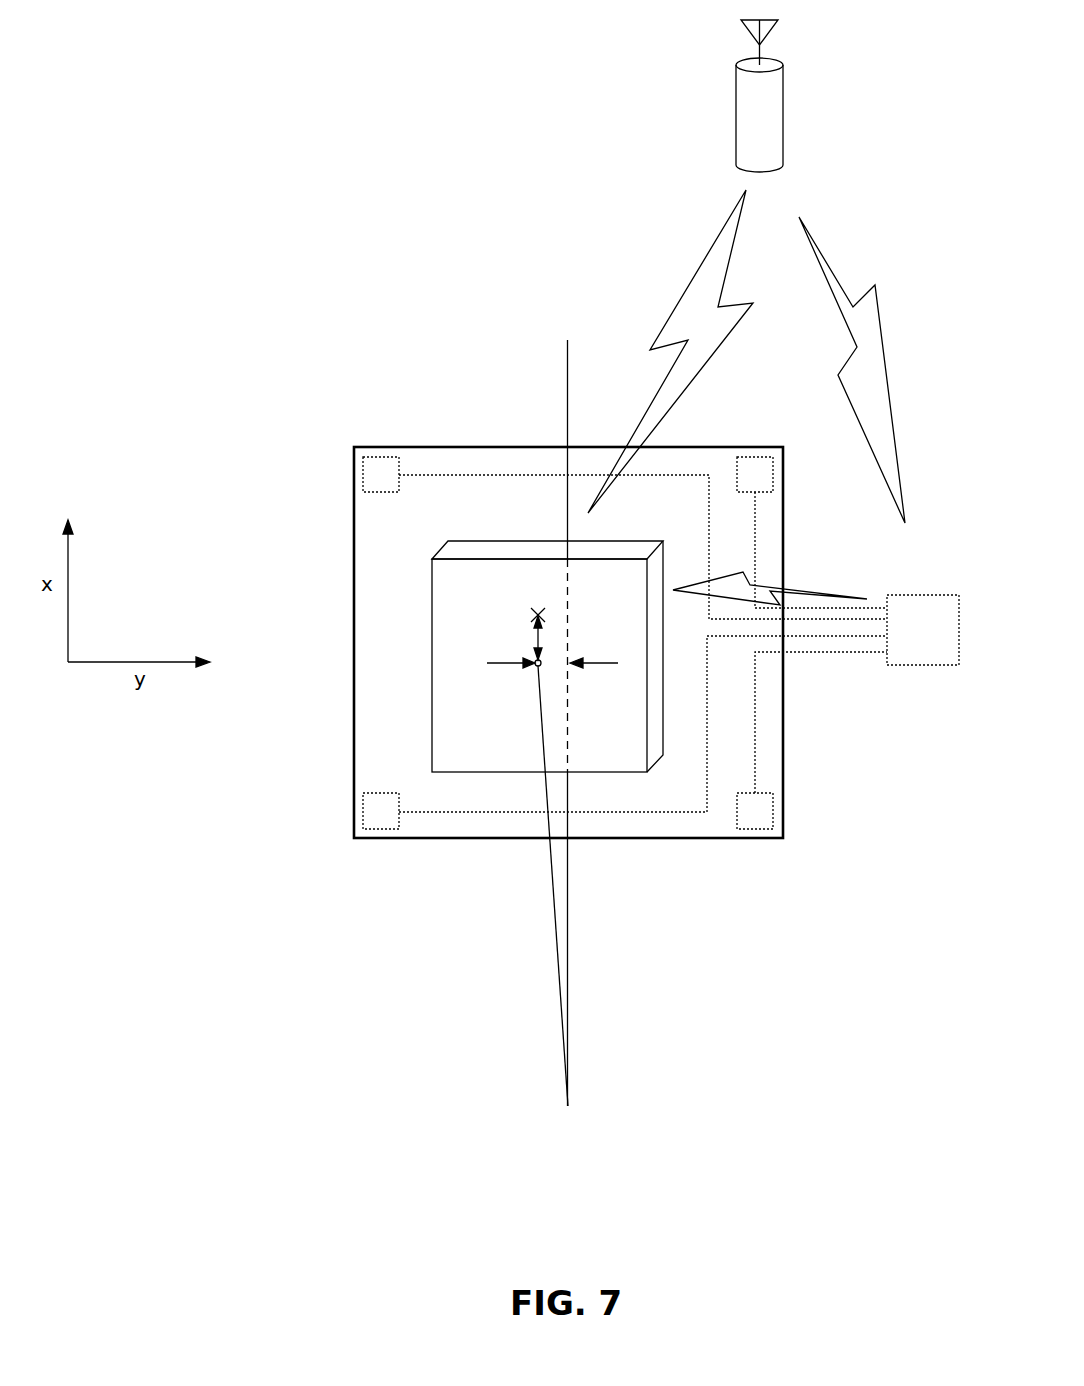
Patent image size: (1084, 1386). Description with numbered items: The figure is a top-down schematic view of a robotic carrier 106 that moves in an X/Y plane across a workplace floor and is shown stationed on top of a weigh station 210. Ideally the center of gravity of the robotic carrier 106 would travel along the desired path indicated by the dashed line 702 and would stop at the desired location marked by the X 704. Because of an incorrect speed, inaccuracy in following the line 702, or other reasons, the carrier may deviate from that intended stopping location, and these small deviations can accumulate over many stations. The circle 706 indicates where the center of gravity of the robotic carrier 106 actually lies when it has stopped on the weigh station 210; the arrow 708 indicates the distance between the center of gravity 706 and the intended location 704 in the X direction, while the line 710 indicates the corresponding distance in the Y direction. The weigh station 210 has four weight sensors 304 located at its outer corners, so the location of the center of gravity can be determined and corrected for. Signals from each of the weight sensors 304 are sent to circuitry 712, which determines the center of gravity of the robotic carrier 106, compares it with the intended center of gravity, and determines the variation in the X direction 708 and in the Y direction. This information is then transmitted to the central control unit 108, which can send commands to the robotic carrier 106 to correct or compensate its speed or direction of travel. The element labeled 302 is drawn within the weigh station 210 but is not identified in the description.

The central control unit 108 is at (745, 110).
The weigh station 210 is at (485, 436).
The circuit board 302 is at (417, 656).
The weight sensors 304 is at (363, 479).
The robotic carrier 106 is at (595, 542).
The dashed line 702 is at (571, 714).
The X 704 is at (533, 617).
The circle 706 is at (536, 667).
The arrow 708 is at (535, 640).
The line 710 is at (588, 662).
The circuitry 712 is at (943, 641).